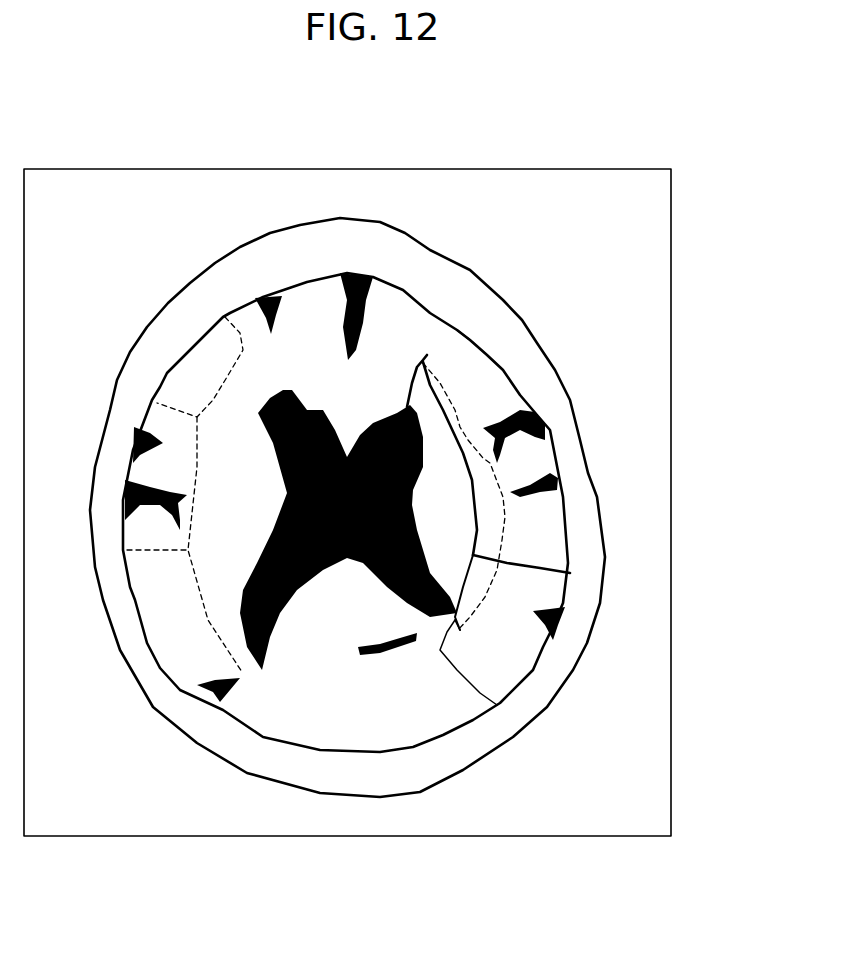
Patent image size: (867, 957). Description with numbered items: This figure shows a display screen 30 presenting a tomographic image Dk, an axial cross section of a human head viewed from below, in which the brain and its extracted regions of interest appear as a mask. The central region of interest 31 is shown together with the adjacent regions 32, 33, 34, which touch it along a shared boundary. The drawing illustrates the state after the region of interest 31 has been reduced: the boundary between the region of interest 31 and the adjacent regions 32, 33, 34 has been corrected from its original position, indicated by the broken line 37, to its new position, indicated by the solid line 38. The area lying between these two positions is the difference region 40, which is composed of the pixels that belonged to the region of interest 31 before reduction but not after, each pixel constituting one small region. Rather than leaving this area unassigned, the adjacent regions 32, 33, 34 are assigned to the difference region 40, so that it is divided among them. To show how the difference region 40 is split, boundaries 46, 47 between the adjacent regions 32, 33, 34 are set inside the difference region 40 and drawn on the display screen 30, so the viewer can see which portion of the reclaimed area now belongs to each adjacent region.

The tomographic image Dk is at (185, 182).
The display screen 30 is at (640, 169).
The region of interest 31 is at (413, 400).
The adjacent region 32 is at (477, 385).
The adjacent region 33 is at (540, 513).
The adjacent region 34 is at (540, 600).
The broken line 37 is at (418, 382).
The solid line 38 is at (427, 357).
The difference region 40 is at (455, 622).
The boundary 46 is at (480, 432).
The boundary 47 is at (500, 540).